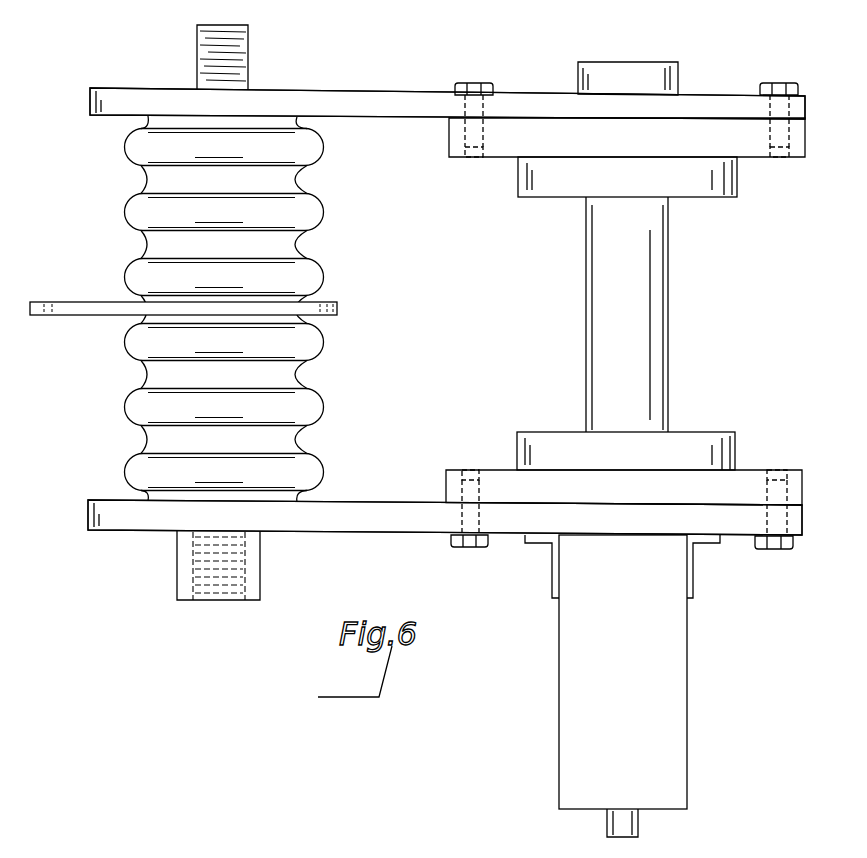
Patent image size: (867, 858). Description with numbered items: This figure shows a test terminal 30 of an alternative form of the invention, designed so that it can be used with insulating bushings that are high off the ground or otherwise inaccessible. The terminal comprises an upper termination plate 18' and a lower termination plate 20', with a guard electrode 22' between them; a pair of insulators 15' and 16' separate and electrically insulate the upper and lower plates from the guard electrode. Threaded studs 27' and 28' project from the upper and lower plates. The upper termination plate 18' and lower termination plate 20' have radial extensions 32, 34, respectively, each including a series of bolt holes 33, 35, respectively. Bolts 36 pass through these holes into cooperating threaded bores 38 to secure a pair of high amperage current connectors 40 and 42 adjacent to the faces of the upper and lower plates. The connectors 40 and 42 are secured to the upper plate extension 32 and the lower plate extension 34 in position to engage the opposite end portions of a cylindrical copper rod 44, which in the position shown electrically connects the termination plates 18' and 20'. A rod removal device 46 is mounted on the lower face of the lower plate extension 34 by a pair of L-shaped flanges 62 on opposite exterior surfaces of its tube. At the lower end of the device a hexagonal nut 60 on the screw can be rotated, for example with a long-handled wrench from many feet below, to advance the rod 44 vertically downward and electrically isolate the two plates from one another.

The upper termination plate 18' is at (447, 85).
The radial extension 32 is at (411, 84).
The upper threaded stud 27' is at (246, 54).
The insulator 15' is at (251, 220).
The insulator 16' is at (245, 413).
The guard electrode 22' is at (183, 287).
The lower termination plate 20' is at (442, 533).
The radial extension 34 is at (392, 496).
The lower threaded stud 28' is at (191, 570).
The threaded bores 38 is at (470, 152).
The bolt holes 33 is at (481, 98).
The bolt holes 35 is at (805, 508).
The bolts 36 is at (470, 86).
The test terminal 30 is at (672, 56).
The high amperage current connector 40 is at (563, 183).
The cylindrical copper rod 44 is at (586, 390).
The high amperage current connector 42 is at (517, 445).
The L-shaped flanges 62 is at (552, 578).
The rod removal device 46 is at (554, 681).
The hexagonal nut 60 is at (613, 832).